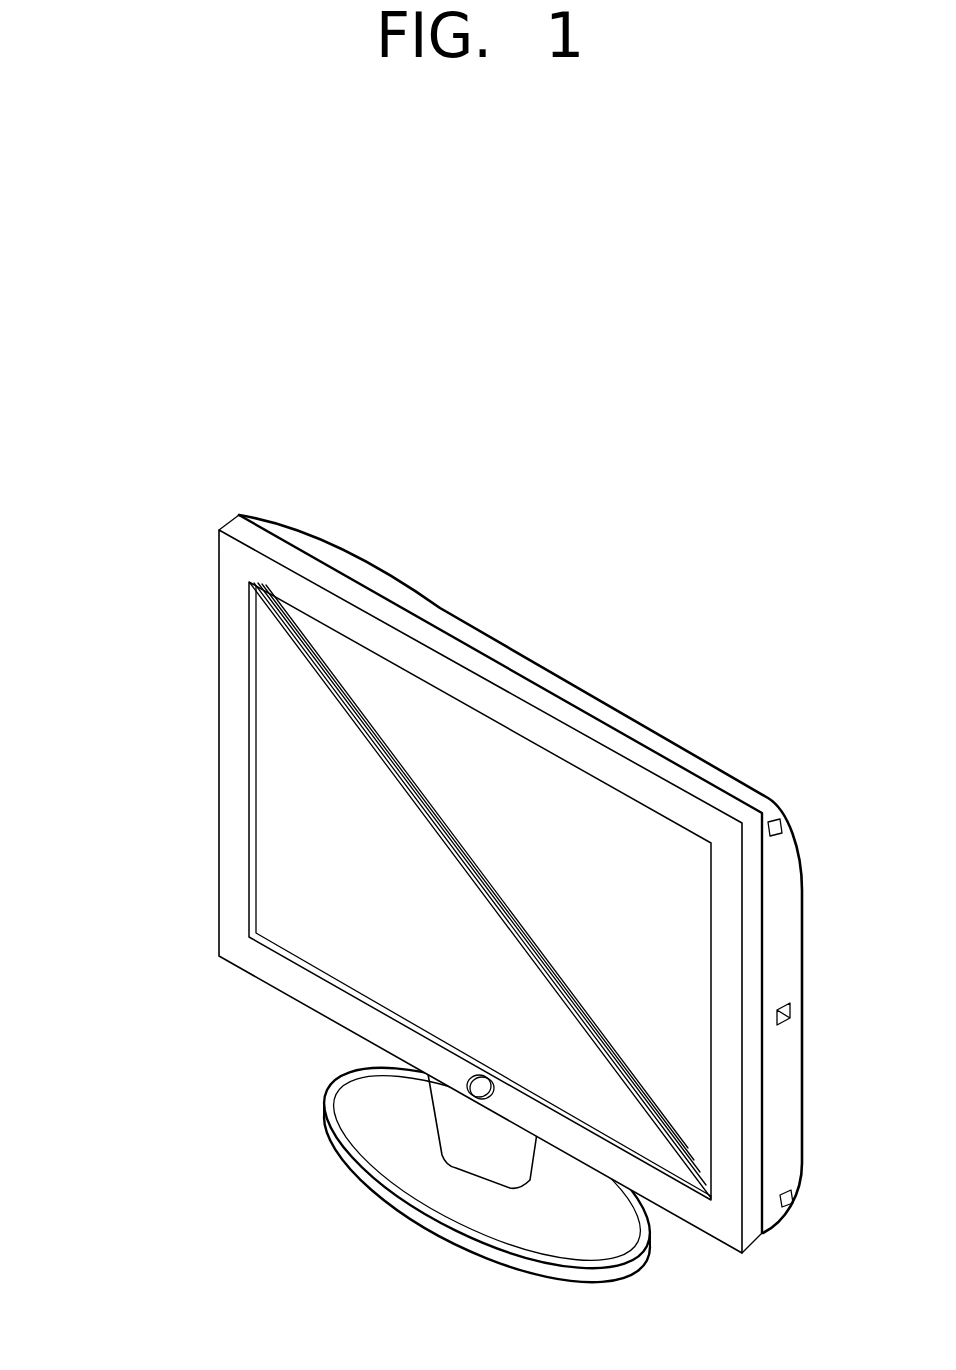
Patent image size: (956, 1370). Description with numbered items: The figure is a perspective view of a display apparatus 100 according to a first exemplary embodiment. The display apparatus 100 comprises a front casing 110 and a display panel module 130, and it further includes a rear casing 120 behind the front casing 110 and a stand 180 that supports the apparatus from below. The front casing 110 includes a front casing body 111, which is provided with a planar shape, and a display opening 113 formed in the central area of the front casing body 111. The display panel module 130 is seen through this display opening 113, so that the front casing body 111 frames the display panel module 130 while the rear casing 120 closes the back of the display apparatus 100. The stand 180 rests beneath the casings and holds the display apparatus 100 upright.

The display apparatus 100 is at (203, 428).
The front casing 110 is at (112, 628).
The front casing body 111 is at (228, 643).
The display opening 113 is at (249, 698).
The rear casing 120 is at (402, 595).
The display panel module 130 is at (305, 862).
The stand 180 is at (488, 1153).